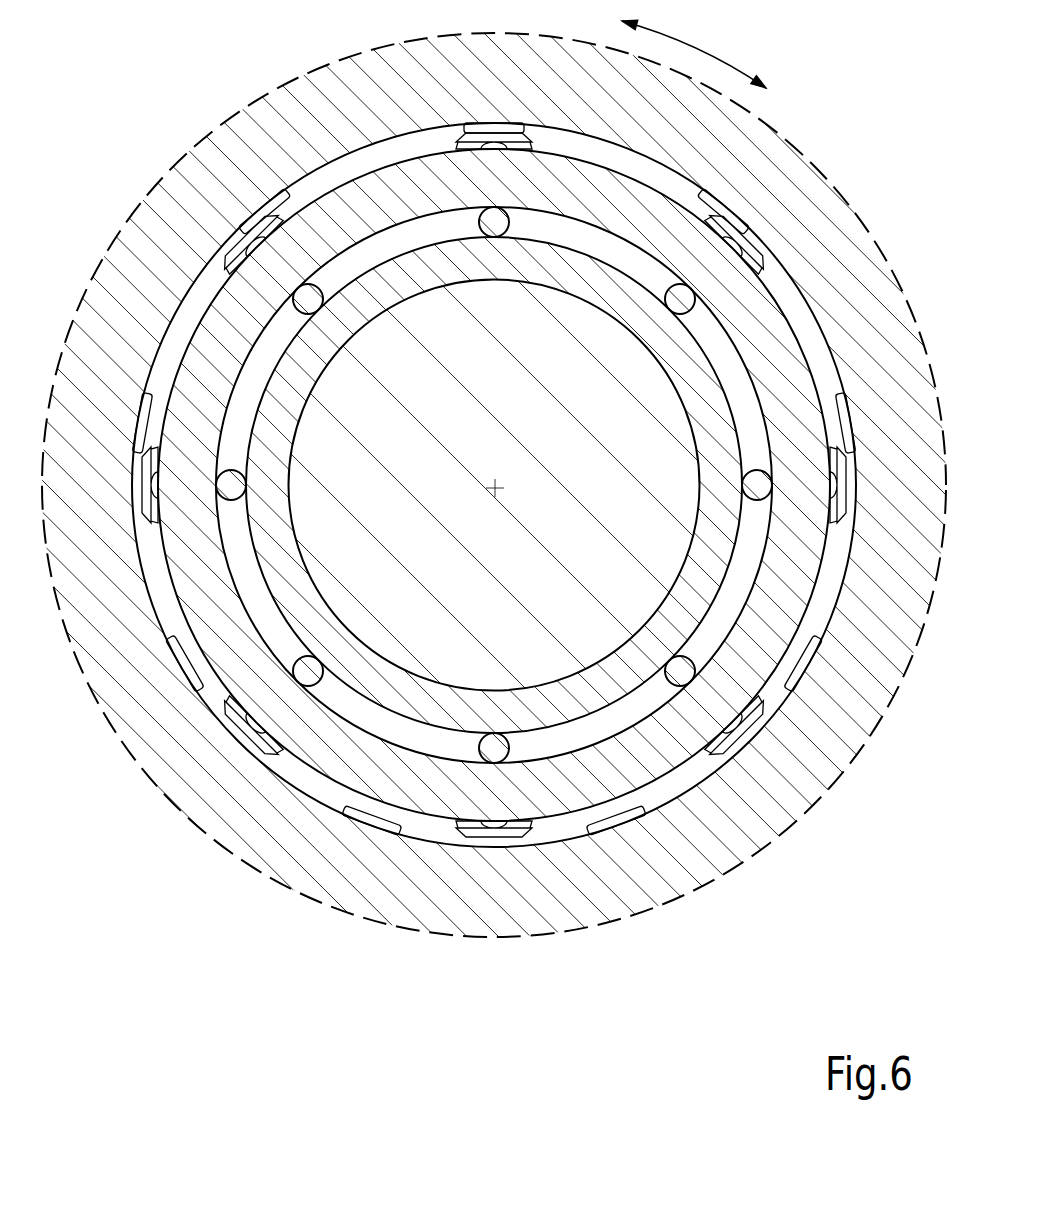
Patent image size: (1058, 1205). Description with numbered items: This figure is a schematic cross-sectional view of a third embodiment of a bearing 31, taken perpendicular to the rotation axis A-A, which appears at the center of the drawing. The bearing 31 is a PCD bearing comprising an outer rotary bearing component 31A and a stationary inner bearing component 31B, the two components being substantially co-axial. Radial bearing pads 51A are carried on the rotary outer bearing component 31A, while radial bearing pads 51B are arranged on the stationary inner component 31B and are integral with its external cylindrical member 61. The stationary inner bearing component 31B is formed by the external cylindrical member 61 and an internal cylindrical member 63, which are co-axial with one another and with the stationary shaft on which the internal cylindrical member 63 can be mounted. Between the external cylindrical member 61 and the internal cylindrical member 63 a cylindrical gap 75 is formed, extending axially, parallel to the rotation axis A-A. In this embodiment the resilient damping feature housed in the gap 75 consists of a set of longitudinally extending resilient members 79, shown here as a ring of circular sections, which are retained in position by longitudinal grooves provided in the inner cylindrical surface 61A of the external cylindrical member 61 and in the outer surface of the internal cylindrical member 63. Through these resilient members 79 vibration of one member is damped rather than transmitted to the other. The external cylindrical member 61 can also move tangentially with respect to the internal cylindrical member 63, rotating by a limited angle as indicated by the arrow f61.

The bearing 31 is at (226, 62).
The outer rotary bearing component 31A is at (322, 107).
The stationary inner bearing component 31B is at (200, 304).
The radial bearing pads 51A is at (485, 127).
The radial bearing pads 51B is at (533, 137).
The external cylindrical member 61 is at (773, 358).
The inner cylindrical surface 61A is at (562, 738).
The internal cylindrical member 63 is at (687, 357).
The cylindrical gap 75 is at (607, 717).
The resilient members 79 is at (307, 672).
The tangential displacement arrow f61 is at (698, 45).
The rotation axis A-A is at (497, 488).